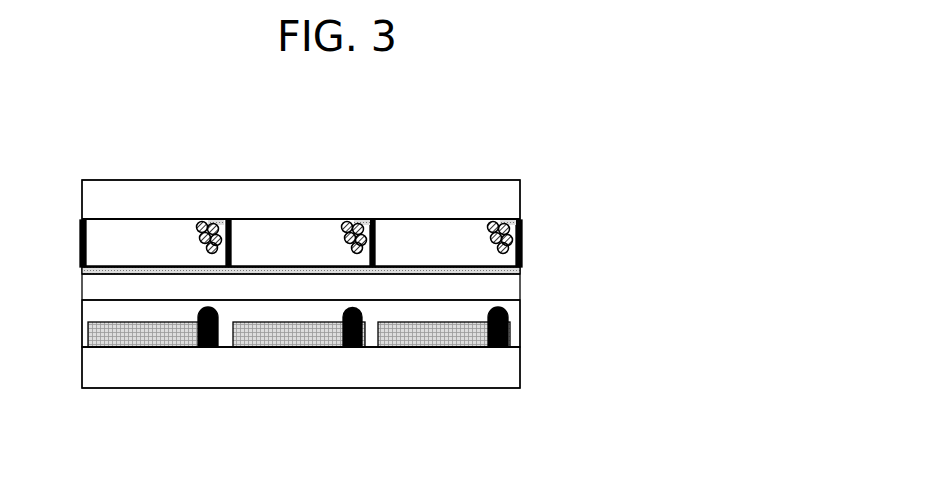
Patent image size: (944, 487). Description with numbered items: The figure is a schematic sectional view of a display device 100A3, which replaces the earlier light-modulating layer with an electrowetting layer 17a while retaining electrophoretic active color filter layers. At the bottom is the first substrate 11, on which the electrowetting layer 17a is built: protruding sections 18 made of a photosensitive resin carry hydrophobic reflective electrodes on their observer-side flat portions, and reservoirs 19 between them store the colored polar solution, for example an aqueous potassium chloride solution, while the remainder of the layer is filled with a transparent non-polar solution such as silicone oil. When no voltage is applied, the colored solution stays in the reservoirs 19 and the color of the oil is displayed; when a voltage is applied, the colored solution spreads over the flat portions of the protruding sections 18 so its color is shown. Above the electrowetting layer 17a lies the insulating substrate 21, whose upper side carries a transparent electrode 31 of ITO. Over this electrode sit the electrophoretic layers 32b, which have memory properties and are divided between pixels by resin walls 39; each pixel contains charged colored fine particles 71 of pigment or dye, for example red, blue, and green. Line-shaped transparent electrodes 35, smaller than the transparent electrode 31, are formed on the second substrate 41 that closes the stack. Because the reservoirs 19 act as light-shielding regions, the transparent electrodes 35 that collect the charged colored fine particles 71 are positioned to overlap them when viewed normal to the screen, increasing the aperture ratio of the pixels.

The display device 100A3 is at (583, 172).
The second substrate 41 is at (270, 193).
The electrophoretic layers 32b is at (522, 243).
The transparent electrodes 35 is at (213, 219).
The resin walls 39 is at (365, 219).
The charged colored fine particles 71 is at (495, 219).
The transparent electrode 31 is at (515, 270).
The insulating substrate 21 is at (85, 290).
The protruding sections 18 is at (95, 333).
The reservoirs 19 is at (506, 328).
The electrowetting layer 17a is at (574, 308).
The first substrate 11 is at (200, 377).